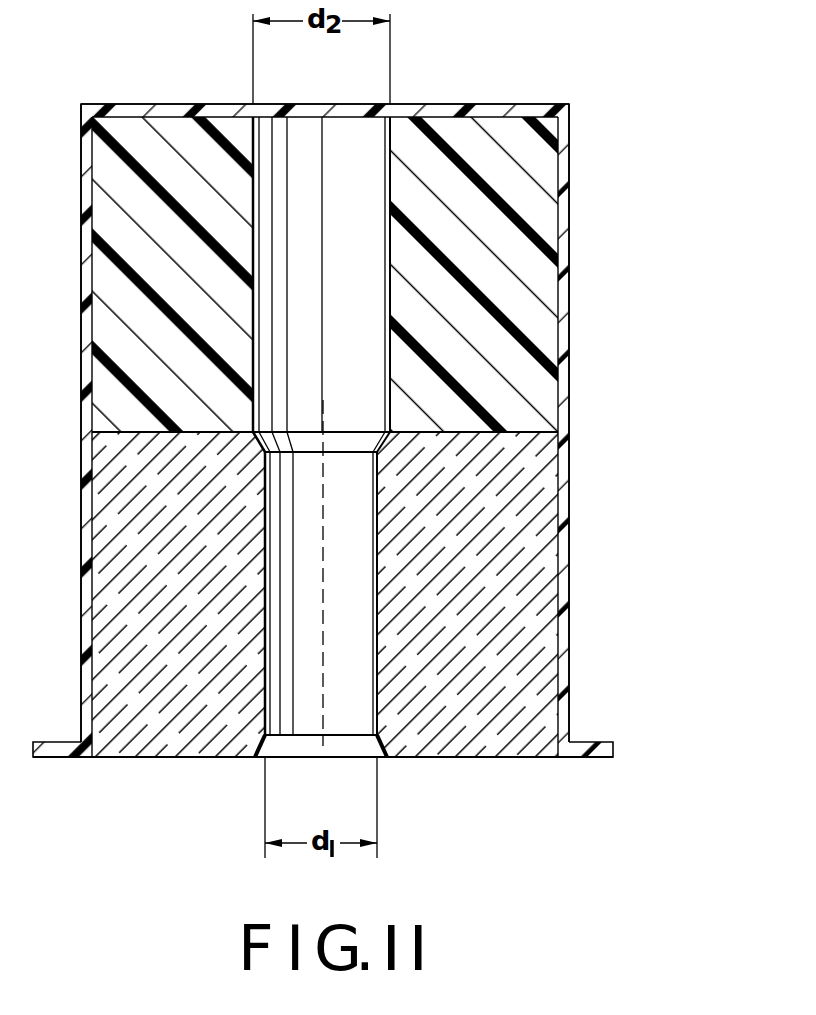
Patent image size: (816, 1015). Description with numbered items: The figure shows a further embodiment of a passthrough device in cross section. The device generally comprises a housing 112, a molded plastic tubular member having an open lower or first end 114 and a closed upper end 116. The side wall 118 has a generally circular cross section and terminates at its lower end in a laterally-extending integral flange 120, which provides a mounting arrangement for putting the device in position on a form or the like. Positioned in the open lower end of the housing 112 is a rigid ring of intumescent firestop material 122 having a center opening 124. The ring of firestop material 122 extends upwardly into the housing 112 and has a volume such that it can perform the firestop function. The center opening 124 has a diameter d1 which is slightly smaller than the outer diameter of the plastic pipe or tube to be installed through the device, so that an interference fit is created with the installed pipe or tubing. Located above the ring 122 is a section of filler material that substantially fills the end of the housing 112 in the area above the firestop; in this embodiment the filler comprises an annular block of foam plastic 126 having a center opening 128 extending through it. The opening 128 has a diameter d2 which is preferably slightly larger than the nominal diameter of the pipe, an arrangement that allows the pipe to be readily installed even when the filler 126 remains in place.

The housing 112 is at (592, 196).
The open lower end 114 is at (461, 765).
The closed upper end 116 is at (515, 103).
The side wall 118 is at (567, 408).
The flange 120 is at (592, 742).
The ring of intumescent firestop material 122 is at (515, 520).
The center opening 124 is at (312, 712).
The annular block of foam plastic 126 is at (523, 280).
The center opening 128 is at (363, 155).